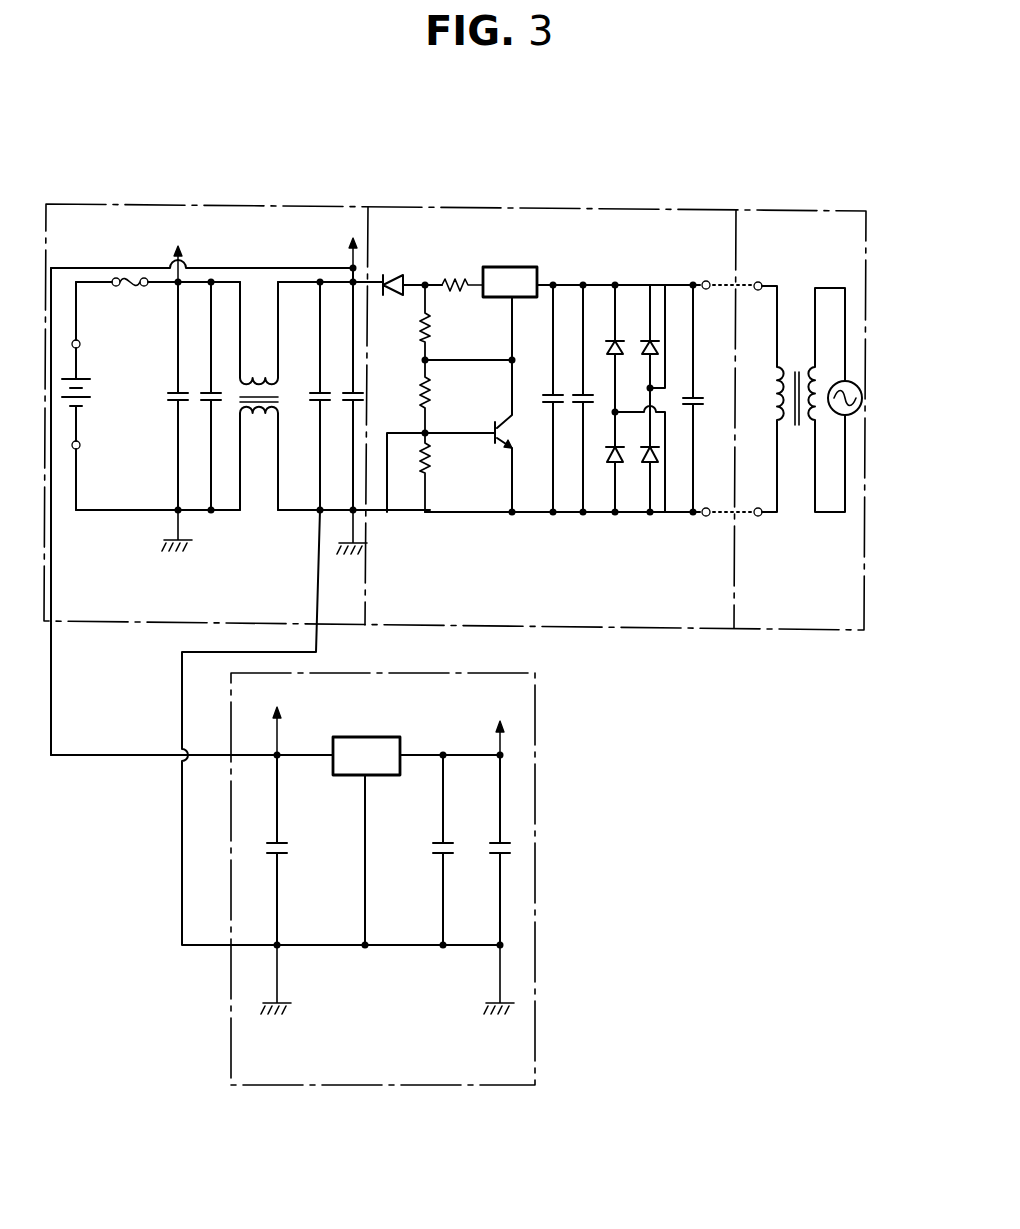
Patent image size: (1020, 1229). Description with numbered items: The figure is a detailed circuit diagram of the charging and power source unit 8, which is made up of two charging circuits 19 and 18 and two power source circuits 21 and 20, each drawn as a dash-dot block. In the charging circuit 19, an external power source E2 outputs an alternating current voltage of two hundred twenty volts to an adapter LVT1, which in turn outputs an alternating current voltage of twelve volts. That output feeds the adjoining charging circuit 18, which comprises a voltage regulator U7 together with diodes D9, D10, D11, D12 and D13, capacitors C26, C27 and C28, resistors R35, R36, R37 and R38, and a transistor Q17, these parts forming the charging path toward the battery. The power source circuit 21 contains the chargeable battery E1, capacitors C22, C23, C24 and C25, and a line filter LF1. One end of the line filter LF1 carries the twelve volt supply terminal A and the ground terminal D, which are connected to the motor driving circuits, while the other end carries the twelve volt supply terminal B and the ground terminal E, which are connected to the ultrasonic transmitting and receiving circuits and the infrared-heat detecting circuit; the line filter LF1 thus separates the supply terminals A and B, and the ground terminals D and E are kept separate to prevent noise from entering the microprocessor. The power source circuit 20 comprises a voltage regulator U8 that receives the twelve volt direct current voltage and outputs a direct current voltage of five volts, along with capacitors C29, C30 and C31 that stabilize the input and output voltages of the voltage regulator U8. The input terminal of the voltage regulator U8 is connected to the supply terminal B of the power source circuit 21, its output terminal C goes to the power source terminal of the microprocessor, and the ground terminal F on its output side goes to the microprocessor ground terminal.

The charging and power source unit 8 is at (698, 151).
The charging circuit 18 is at (520, 207).
The charging circuit 19 is at (792, 210).
The power source circuit 20 is at (535, 918).
The power source circuit 21 is at (184, 204).
The capacitor C22 is at (158, 396).
The capacitor C23 is at (200, 396).
The capacitor C24 is at (305, 396).
The capacitor C25 is at (371, 389).
The capacitor C26 is at (539, 398).
The capacitor C27 is at (595, 398).
The capacitor C28 is at (707, 398).
The capacitor C29 is at (262, 850).
The capacitor C30 is at (424, 850).
The capacitor C31 is at (482, 850).
The diode D9 is at (604, 348).
The diode D10 is at (603, 462).
The diode D11 is at (670, 336).
The diode D12 is at (671, 450).
The diode D13 is at (412, 270).
The resistor R35 is at (443, 322).
The resistor R36 is at (443, 396).
The resistor R37 is at (443, 472).
The resistor R38 is at (462, 268).
The voltage regulator U7 is at (510, 300).
The voltage regulator U8 is at (366, 829).
The transistor Q17 is at (493, 436).
The line filter LF1 is at (254, 413).
The adapter LVT1 is at (799, 388).
The chargeable battery E1 is at (83, 396).
The external power source E2 is at (857, 388).